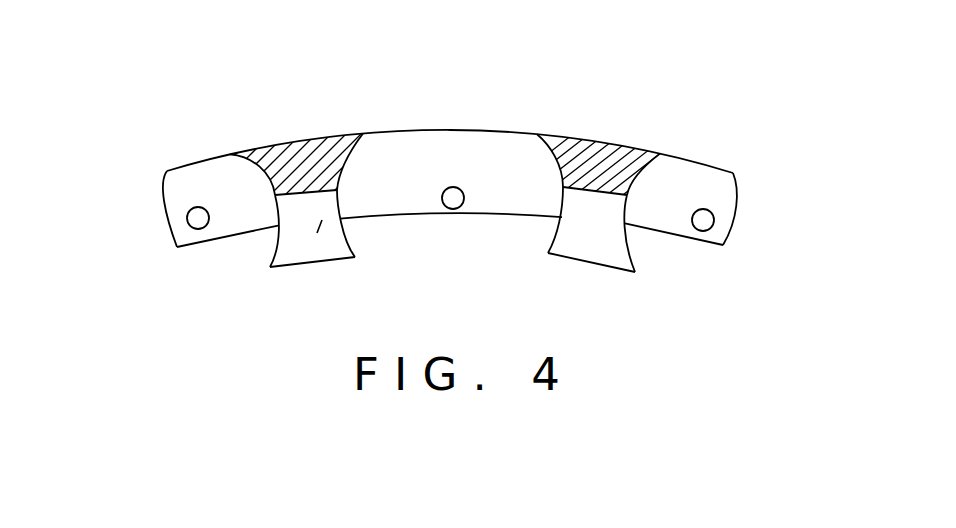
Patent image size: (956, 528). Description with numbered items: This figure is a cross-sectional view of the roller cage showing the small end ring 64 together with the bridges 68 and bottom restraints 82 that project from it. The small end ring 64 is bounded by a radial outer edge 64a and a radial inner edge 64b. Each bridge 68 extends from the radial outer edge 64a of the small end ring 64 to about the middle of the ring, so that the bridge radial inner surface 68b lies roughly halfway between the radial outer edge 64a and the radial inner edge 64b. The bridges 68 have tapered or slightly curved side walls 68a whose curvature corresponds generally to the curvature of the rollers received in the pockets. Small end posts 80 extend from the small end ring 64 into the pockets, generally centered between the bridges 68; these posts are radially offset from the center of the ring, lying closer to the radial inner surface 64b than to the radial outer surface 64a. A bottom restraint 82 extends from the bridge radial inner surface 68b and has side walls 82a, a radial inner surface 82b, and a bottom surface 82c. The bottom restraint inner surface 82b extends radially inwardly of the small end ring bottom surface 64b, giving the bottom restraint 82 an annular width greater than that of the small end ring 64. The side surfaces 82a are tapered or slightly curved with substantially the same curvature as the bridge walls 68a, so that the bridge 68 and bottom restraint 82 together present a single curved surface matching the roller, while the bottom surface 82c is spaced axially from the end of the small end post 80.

The small end ring 64 is at (660, 139).
The radial outer edge of the small end ring 64a is at (515, 130).
The radial inner edge of the small end ring 64b is at (495, 220).
The bridge 68 is at (658, 165).
The bridge side wall 68a is at (550, 155).
The bridge radial inner surface 68b is at (603, 196).
The small end post 80 is at (197, 219).
The bottom restraint 82 is at (268, 254).
The bottom restraint side wall 82a is at (278, 226).
The bottom restraint radial inner surface 82b is at (298, 266).
The bottom restraint bottom surface 82c is at (318, 228).